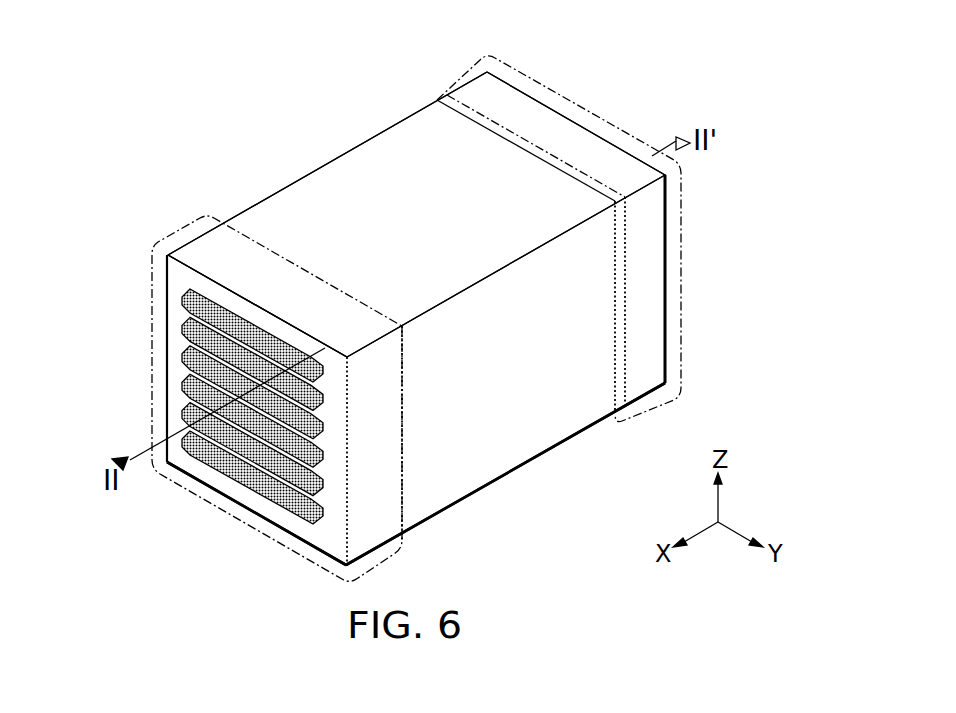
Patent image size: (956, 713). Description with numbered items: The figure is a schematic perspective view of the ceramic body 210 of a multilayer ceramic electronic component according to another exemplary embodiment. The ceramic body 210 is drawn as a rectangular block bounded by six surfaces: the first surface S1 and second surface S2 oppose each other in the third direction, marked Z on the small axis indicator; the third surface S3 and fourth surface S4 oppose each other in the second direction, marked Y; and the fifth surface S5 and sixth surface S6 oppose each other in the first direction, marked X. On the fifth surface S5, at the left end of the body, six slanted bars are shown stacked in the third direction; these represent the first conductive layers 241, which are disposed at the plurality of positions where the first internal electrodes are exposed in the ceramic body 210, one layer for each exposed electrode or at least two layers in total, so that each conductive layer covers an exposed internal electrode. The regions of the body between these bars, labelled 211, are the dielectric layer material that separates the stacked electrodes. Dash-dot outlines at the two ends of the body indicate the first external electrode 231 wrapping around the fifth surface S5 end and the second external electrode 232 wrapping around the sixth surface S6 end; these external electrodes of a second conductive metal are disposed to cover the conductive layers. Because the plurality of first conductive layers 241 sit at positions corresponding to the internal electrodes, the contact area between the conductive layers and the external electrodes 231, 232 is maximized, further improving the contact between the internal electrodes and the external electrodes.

The ceramic body 210 is at (252, 30).
The dielectric layer 211 is at (179, 322).
The first conductive layer 241 is at (195, 421).
The first external electrode 231 is at (180, 234).
The second external electrode 232 is at (462, 70).
The first surface S1 is at (415, 137).
The second surface S2 is at (470, 472).
The third surface S3 is at (571, 401).
The fourth surface S4 is at (266, 217).
The fifth surface S5 is at (235, 466).
The sixth surface S6 is at (582, 146).